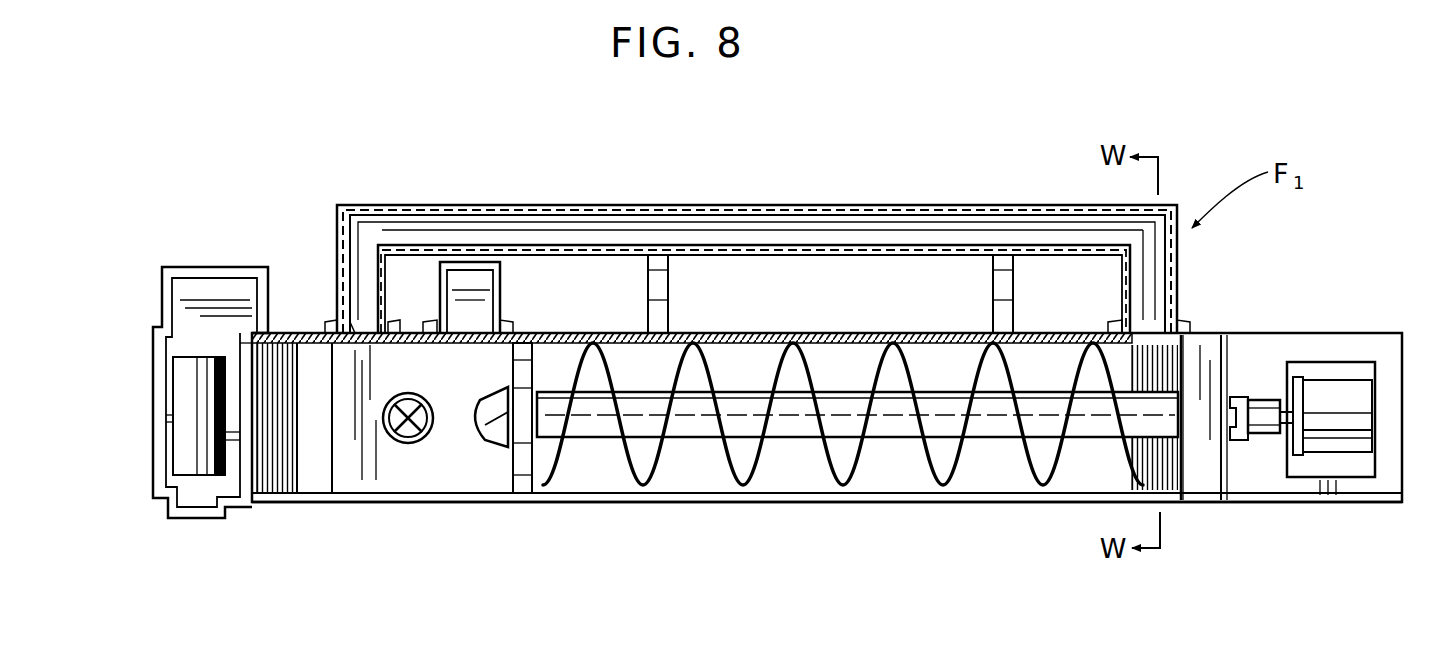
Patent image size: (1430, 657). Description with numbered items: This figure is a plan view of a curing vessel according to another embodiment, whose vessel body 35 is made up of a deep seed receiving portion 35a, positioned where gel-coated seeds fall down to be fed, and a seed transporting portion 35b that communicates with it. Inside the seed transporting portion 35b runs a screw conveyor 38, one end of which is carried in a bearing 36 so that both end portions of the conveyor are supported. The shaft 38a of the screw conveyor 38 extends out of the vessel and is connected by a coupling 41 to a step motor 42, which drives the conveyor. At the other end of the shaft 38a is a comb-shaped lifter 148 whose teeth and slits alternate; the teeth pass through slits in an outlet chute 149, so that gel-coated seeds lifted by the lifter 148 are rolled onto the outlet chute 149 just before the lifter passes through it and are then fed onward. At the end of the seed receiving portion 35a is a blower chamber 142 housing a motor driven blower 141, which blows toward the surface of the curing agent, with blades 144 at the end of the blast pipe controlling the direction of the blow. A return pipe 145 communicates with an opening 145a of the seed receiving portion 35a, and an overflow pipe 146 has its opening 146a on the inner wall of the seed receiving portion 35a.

The curing vessel body 35 is at (670, 575).
The seed receiving portion 35a is at (440, 500).
The seed transporting portion 35b is at (650, 497).
The bearing 36 is at (522, 430).
The screw conveyor 38 is at (930, 468).
The shaft 38a is at (1249, 390).
The coupling 41 is at (1258, 437).
The step motor 42 is at (1332, 388).
The motor driven blower 141 is at (183, 405).
The blower chamber 142 is at (205, 267).
The blades 144 is at (312, 507).
The return pipe 145 is at (747, 205).
The opening 145a is at (338, 295).
The overflow pipe 146 is at (500, 287).
The opening of overflow pipe 146a is at (470, 343).
The lifter 148 is at (1137, 415).
The outlet chute 149 is at (1177, 497).